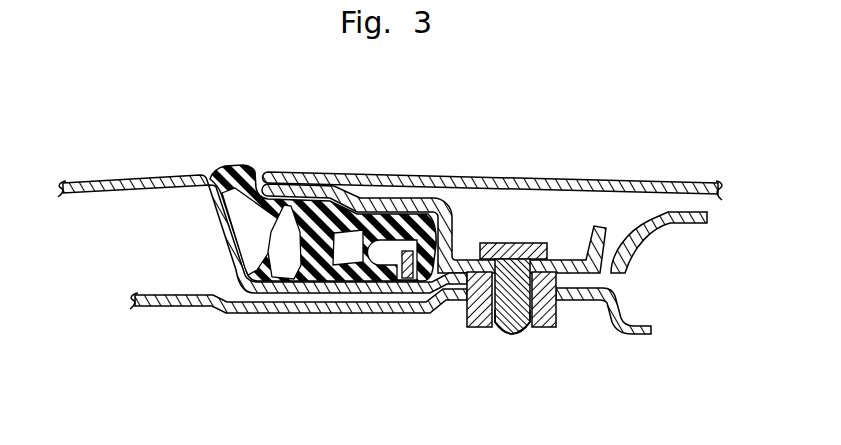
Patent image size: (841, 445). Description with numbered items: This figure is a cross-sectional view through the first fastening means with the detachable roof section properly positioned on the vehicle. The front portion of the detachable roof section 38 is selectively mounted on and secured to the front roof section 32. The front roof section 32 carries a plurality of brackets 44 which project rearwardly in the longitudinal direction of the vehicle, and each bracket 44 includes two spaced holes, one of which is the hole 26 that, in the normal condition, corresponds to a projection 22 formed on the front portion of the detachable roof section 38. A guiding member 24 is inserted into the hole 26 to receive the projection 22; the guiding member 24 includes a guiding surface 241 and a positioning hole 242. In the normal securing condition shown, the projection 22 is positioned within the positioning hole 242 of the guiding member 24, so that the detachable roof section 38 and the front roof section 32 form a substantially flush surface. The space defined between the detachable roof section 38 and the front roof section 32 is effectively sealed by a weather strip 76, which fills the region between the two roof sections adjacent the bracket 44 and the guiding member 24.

The projection 22 is at (518, 322).
The guiding member 24 is at (553, 328).
The guiding surface 241 is at (503, 327).
The positioning hole 242 is at (526, 327).
The hole 26 is at (466, 320).
The front roof section 32 is at (185, 169).
The detachable roof section 38 is at (525, 177).
The bracket 44 is at (305, 302).
The weather strip 76 is at (245, 168).